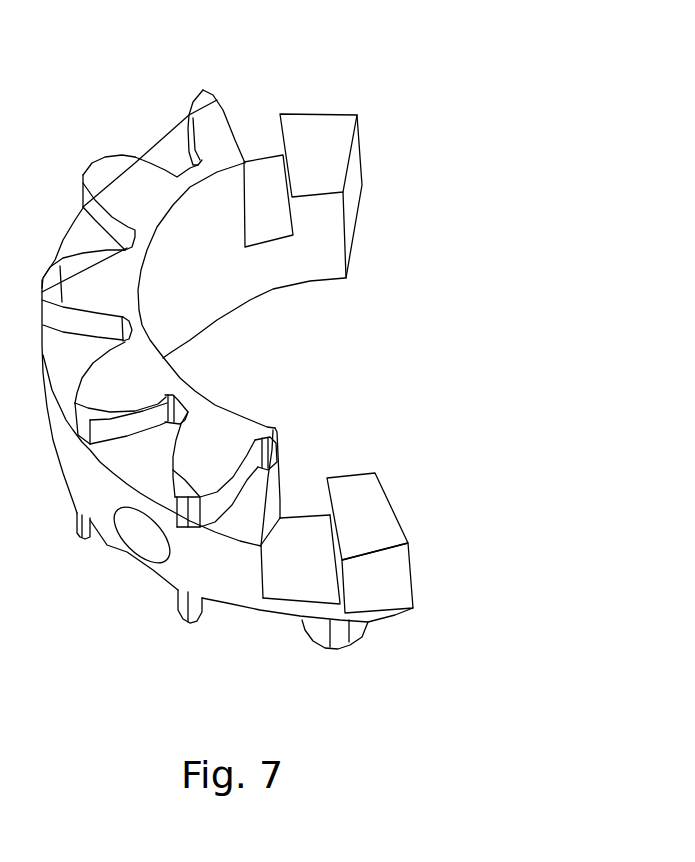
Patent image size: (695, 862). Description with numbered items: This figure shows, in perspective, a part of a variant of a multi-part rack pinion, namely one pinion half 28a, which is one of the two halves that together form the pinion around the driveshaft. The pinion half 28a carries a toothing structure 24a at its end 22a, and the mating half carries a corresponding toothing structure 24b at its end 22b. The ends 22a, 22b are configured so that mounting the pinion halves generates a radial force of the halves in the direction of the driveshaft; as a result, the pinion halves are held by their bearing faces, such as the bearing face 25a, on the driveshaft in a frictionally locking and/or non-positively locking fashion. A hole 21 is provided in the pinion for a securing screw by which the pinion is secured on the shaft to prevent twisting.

The hole 21 is at (132, 556).
The end 22a is at (390, 626).
The end 22b is at (323, 74).
The toothing structure 24a is at (373, 517).
The toothing structure 24b is at (326, 162).
The bearing face 25a is at (331, 278).
The pinion half 28a is at (157, 600).